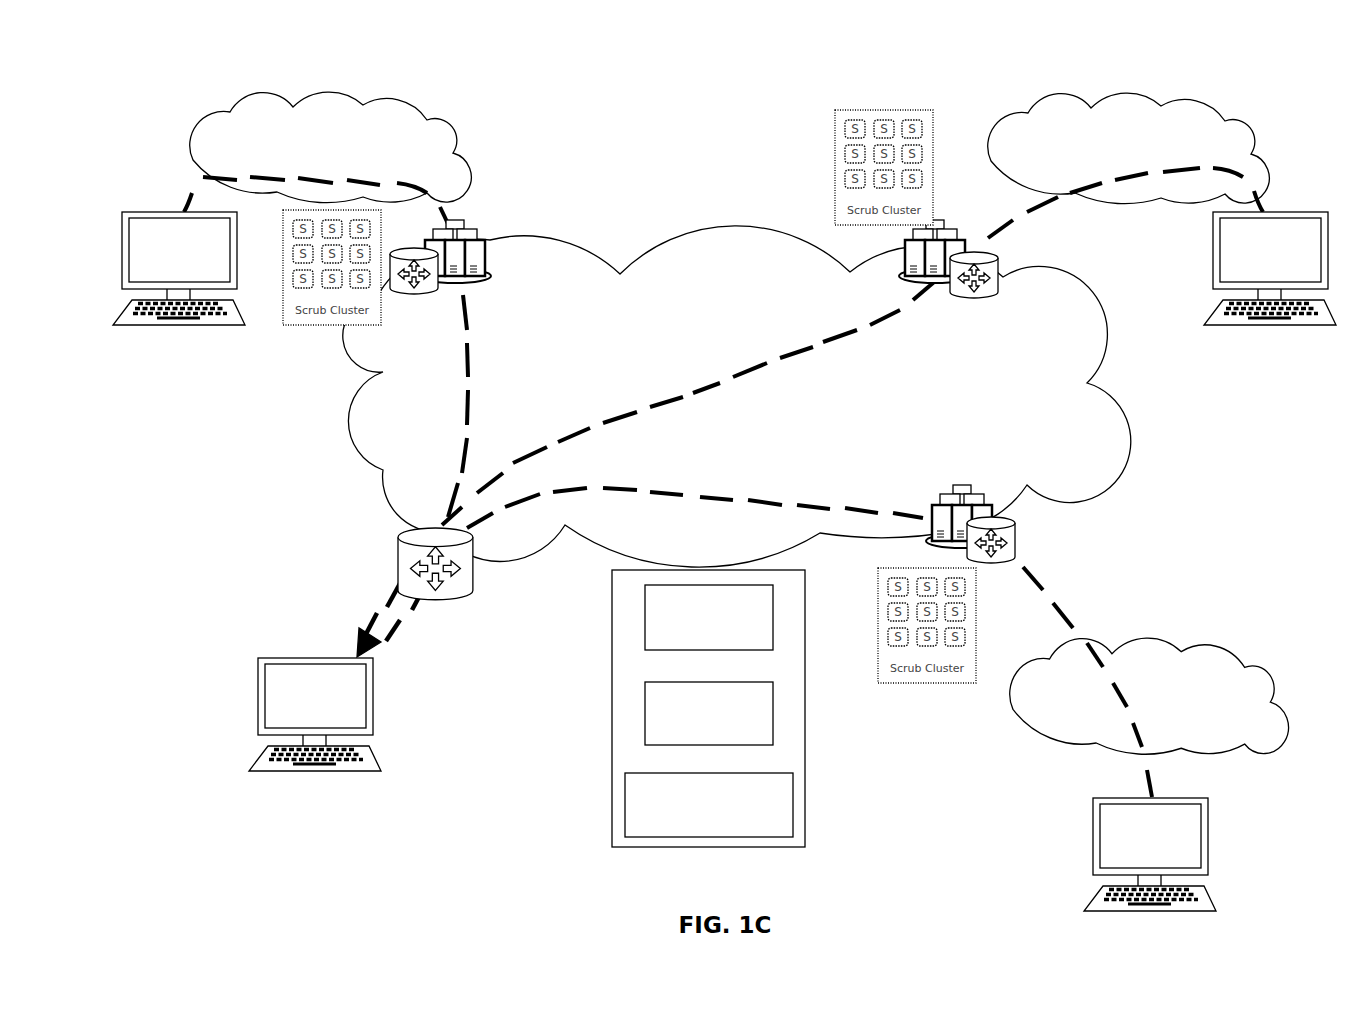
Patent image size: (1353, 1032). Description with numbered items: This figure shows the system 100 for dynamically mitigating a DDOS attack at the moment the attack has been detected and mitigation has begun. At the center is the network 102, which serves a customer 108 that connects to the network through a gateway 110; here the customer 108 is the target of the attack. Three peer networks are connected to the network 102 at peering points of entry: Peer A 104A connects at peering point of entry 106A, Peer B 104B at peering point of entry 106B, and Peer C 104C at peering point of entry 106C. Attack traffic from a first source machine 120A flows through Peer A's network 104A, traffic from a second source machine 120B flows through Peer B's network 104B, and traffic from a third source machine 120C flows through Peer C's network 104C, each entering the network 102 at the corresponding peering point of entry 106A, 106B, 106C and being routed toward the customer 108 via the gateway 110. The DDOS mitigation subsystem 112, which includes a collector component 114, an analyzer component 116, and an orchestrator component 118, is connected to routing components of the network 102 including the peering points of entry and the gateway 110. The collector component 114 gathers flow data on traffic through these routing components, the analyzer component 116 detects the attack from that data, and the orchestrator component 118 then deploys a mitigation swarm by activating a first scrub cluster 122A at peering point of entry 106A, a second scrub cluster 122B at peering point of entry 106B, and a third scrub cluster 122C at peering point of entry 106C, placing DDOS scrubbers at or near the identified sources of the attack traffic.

The system 100 is at (521, 52).
The network 102 is at (1133, 427).
The Peer A network 104A is at (260, 95).
The Peer B network 104B is at (1057, 95).
The Peer C network 104C is at (1227, 742).
The peering point of entry 106A is at (477, 240).
The peering point of entry 106B is at (1000, 268).
The peering point of entry 106C is at (1017, 532).
The customer 108 is at (373, 773).
The gateway 110 is at (407, 565).
The DDOS mitigation subsystem 112 is at (735, 719).
The collector component 114 is at (707, 650).
The analyzer component 116 is at (713, 745).
The orchestrator component 118 is at (715, 838).
The first source machine 120A is at (165, 212).
The second source machine 120B is at (1260, 215).
The third source machine 120C is at (1207, 847).
The first scrub cluster 122A is at (317, 323).
The second scrub cluster 122B is at (863, 110).
The third scrub cluster 122C is at (910, 673).